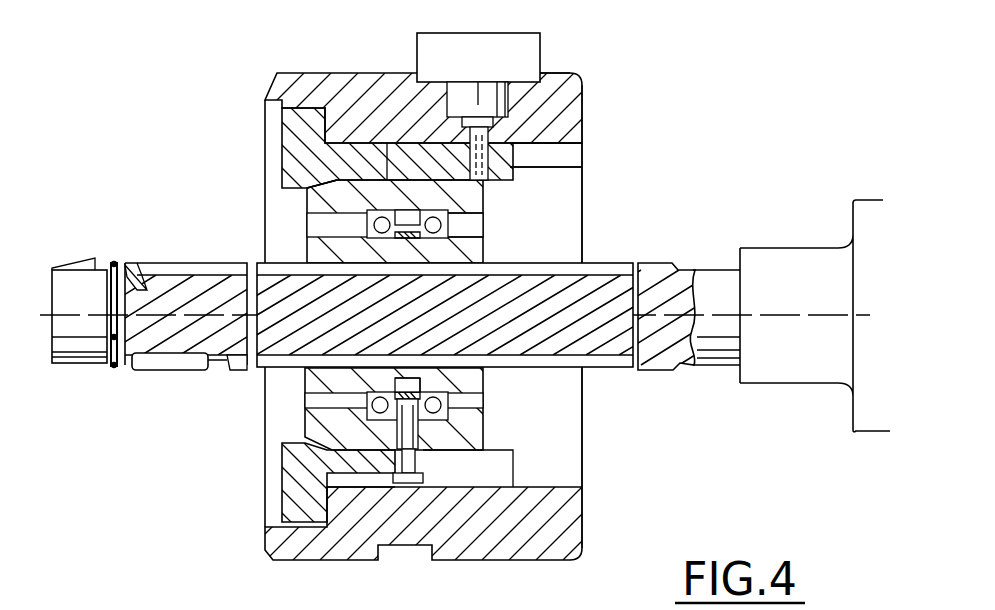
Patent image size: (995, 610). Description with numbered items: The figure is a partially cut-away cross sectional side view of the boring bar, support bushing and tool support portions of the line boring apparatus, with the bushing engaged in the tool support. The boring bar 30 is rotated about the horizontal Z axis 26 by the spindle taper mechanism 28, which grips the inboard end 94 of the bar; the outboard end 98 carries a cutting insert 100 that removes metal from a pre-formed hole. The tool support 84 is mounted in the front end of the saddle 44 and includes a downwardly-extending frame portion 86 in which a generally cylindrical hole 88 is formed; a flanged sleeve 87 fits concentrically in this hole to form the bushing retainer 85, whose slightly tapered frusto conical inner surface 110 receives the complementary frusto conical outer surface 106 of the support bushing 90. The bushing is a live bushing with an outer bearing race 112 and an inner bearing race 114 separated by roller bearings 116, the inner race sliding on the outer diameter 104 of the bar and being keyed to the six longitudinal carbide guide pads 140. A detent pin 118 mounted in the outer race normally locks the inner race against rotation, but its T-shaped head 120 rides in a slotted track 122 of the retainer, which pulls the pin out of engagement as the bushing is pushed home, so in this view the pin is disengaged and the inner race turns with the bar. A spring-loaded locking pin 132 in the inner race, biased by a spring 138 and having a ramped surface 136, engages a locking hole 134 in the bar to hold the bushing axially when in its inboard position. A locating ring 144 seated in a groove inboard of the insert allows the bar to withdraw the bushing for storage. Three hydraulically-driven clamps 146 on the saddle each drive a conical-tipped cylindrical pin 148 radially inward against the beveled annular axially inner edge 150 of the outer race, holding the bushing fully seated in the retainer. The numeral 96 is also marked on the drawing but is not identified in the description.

The rotational spindle axis 26 is at (75, 318).
The taper mechanism 28 is at (765, 250).
The boring bar 30 is at (603, 266).
The saddle 44 is at (587, 74).
The tool support 84 is at (587, 90).
The bushing retainer 85 is at (308, 177).
The downwardly-extending frame portion 86 is at (553, 85).
The flanged sleeve 87 is at (297, 105).
The cylindrical hole 88 is at (585, 155).
The support bushing 90 is at (333, 207).
The inboard end 94 is at (705, 268).
The set screw 96 is at (95, 353).
The outboard end 98 is at (135, 268).
The cutting insert 100 is at (77, 258).
The outer diameter 104 is at (715, 370).
The frusto conical outer surface 106 is at (387, 178).
The frusto conical inner surface 110 is at (500, 182).
The outer bearing race 112 is at (470, 215).
The inner bearing race 114 is at (470, 250).
The roller bearings 116 is at (455, 400).
The detent pin 118 is at (422, 462).
The T-shaped head 120 is at (403, 485).
The slotted track 122 is at (450, 480).
The locking pin 132 is at (420, 380).
The locking hole 134 is at (207, 373).
The ramped surface 136 is at (405, 378).
The spring 138 is at (470, 380).
The carbide guide pads 140 is at (185, 265).
The locating ring 144 is at (112, 372).
The hydraulically-driven clamp 146 is at (487, 50).
The conical-tipped cylindrical pin 148 is at (565, 167).
The beveled annular axially inner edge 150 is at (458, 450).